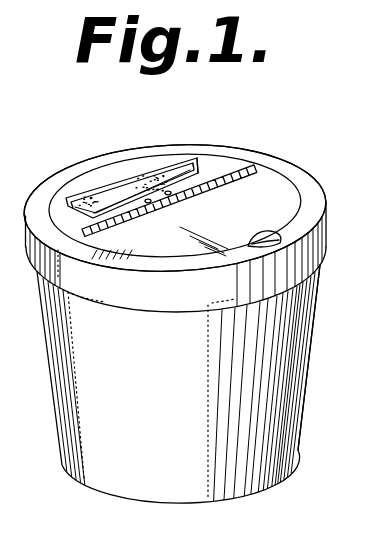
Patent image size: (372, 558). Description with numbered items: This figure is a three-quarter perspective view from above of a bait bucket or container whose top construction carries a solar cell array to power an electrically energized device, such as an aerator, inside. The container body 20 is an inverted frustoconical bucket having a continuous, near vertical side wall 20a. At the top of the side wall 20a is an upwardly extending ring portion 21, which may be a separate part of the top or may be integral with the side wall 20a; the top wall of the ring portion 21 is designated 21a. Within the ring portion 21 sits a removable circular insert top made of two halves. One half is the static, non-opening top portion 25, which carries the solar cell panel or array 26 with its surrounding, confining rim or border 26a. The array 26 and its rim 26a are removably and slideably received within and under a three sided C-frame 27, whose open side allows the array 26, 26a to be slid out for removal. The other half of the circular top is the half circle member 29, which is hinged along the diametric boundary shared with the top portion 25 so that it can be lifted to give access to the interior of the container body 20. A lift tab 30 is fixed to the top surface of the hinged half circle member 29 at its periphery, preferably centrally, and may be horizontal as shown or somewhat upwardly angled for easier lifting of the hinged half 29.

The container body 20 is at (103, 456).
The side wall 20a is at (302, 402).
The ring portion 21 is at (327, 240).
The top wall of ring portion 21a is at (298, 178).
The static top portion 25 is at (234, 163).
The solar cell array 26 is at (190, 163).
The rim 26a is at (115, 207).
The three sided frame 27 is at (198, 161).
The half circle member 29 is at (171, 251).
The tab 30 is at (266, 236).